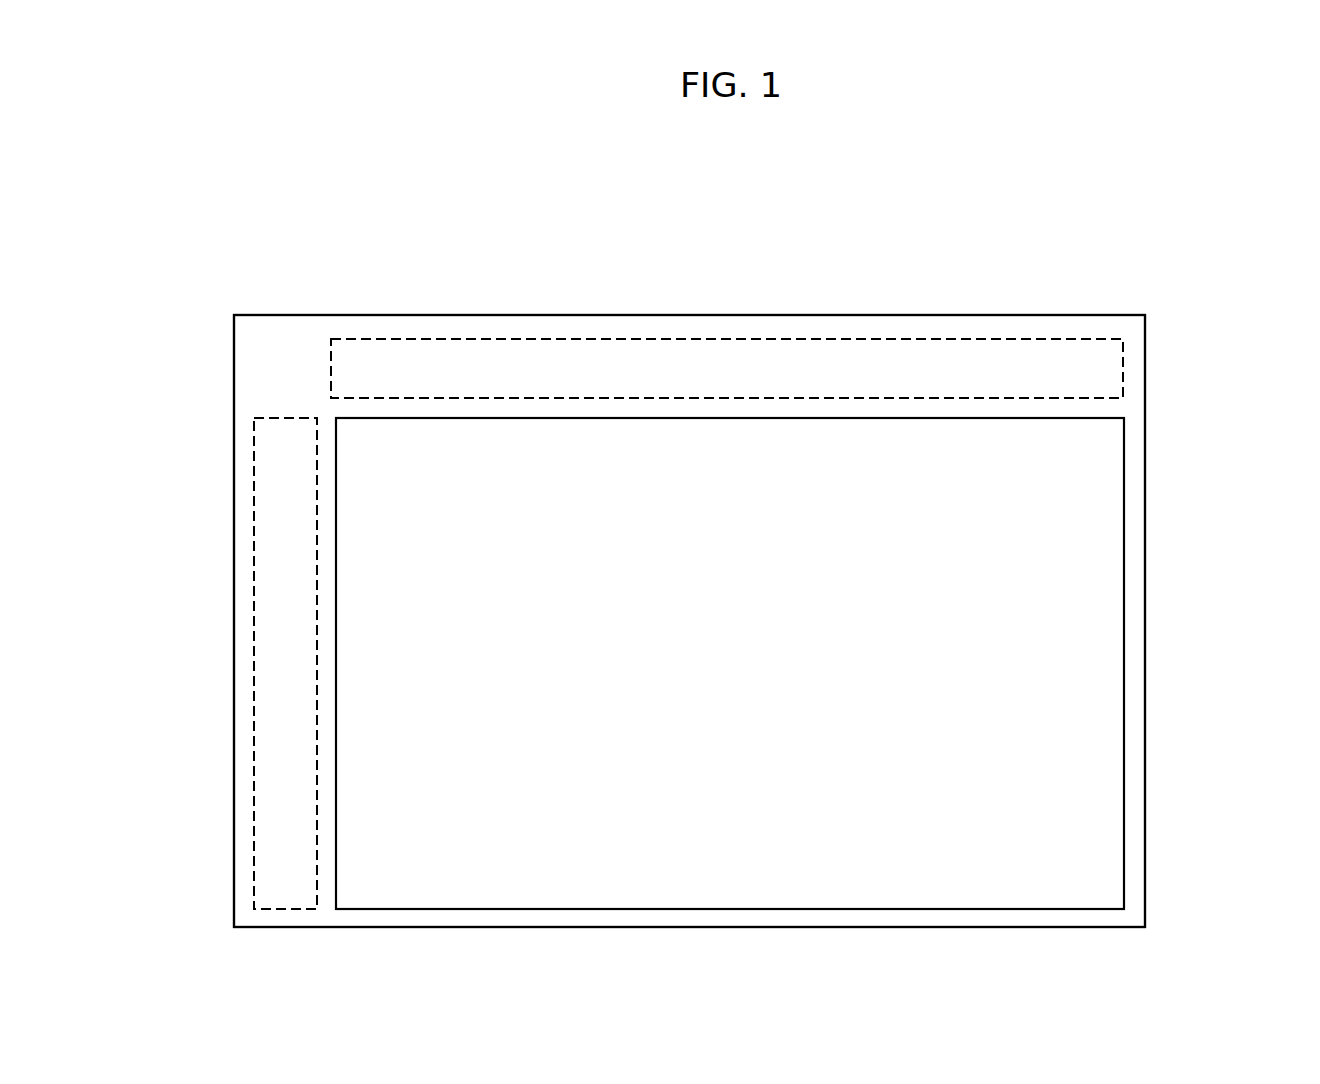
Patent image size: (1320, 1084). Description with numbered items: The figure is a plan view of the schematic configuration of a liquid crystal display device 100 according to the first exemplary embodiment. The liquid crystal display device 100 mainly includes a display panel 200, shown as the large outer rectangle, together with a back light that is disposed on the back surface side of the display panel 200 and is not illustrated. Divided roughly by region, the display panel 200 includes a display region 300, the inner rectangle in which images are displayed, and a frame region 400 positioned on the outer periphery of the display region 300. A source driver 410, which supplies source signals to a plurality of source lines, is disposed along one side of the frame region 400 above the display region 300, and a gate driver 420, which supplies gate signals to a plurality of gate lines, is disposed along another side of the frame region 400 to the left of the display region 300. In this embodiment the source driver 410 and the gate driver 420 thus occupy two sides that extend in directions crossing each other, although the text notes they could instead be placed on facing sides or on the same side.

The liquid crystal display device 100 is at (1121, 238).
The display panel 200 is at (1145, 560).
The display region 300 is at (1100, 673).
The frame region 400 is at (1133, 748).
The source driver 410 is at (787, 338).
The gate driver 420 is at (255, 593).